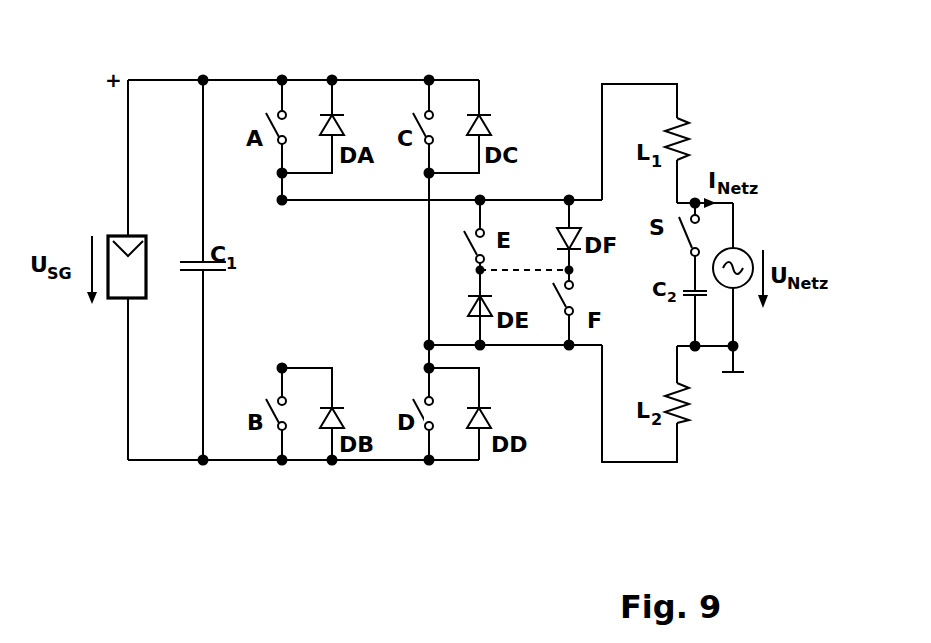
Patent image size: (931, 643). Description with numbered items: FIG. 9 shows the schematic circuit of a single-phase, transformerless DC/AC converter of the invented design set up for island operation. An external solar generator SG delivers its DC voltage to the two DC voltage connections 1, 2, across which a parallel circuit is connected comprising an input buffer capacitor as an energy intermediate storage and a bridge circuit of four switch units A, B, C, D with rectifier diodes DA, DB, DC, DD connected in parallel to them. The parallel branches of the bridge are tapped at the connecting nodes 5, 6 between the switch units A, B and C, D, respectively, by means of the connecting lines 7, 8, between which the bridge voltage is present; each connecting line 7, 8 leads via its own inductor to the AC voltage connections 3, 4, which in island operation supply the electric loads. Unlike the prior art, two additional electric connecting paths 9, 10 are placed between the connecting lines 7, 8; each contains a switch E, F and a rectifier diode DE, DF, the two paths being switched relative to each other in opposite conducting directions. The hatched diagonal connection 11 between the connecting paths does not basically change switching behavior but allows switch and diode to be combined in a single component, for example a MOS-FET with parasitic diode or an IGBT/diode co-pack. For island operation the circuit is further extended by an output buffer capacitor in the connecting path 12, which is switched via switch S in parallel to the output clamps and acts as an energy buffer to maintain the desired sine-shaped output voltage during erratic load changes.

The DC voltage connection 1 is at (209, 75).
The DC voltage connection 2 is at (209, 467).
The AC voltage connection 3 is at (697, 200).
The AC voltage connection 4 is at (697, 348).
The connecting node 5 is at (289, 204).
The connecting node 6 is at (426, 341).
The connecting line 7 is at (522, 197).
The connecting line 8 is at (525, 351).
The connecting path 9 is at (468, 286).
The connecting path 10 is at (572, 267).
The electrical connection 11 is at (485, 272).
The connecting path 12 is at (697, 308).